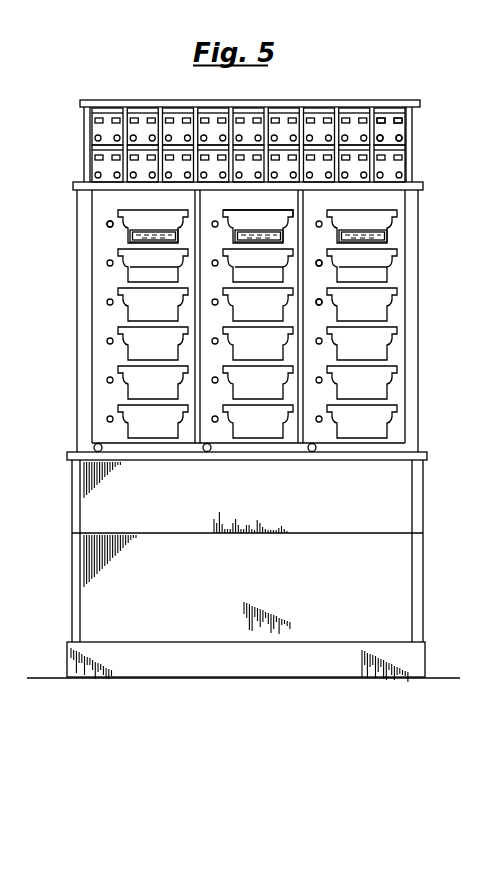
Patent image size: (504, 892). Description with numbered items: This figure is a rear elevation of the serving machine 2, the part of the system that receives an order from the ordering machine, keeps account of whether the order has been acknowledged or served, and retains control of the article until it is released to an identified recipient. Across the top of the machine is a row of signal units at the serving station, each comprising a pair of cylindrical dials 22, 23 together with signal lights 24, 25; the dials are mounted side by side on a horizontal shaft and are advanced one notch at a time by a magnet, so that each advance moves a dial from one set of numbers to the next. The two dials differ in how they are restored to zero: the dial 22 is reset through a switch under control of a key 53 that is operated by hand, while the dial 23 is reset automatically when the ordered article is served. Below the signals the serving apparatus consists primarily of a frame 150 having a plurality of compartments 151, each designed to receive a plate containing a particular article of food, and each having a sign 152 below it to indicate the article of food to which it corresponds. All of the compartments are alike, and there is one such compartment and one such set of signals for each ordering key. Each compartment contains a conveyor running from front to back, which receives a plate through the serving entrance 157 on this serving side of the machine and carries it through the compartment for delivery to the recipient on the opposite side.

The serving machine 2 is at (148, 96).
The dial 22 is at (383, 118).
The dial 23 is at (399, 118).
The signal light 24 is at (383, 138).
The signal light 25 is at (402, 139).
The frame 150 is at (415, 203).
The compartment 151 is at (383, 258).
The sign 152 is at (285, 232).
The serving entrance 157 is at (230, 213).
The key 53 is at (319, 300).